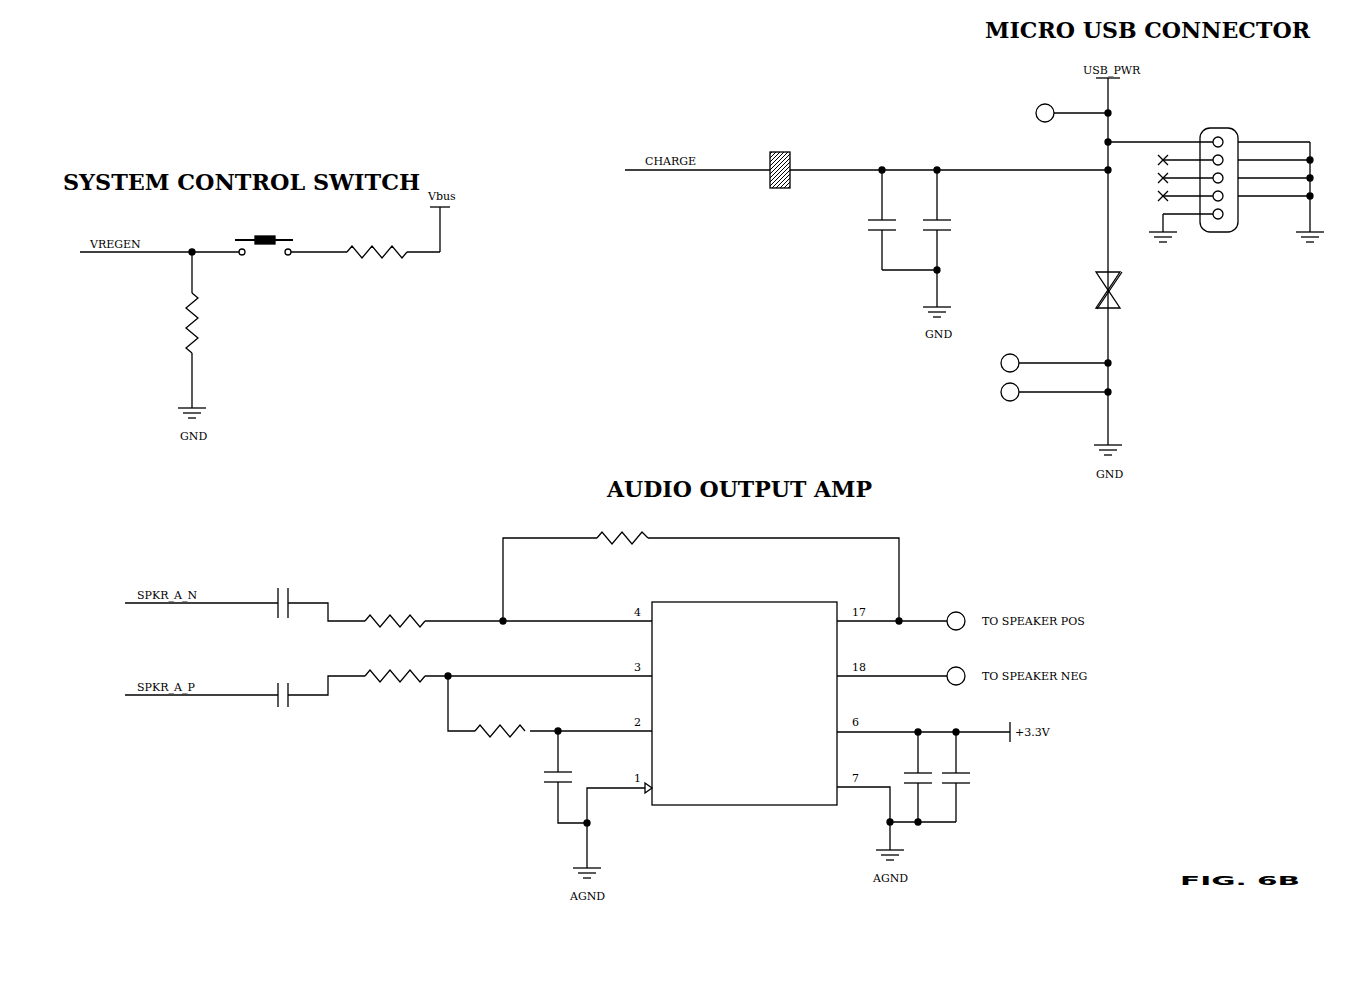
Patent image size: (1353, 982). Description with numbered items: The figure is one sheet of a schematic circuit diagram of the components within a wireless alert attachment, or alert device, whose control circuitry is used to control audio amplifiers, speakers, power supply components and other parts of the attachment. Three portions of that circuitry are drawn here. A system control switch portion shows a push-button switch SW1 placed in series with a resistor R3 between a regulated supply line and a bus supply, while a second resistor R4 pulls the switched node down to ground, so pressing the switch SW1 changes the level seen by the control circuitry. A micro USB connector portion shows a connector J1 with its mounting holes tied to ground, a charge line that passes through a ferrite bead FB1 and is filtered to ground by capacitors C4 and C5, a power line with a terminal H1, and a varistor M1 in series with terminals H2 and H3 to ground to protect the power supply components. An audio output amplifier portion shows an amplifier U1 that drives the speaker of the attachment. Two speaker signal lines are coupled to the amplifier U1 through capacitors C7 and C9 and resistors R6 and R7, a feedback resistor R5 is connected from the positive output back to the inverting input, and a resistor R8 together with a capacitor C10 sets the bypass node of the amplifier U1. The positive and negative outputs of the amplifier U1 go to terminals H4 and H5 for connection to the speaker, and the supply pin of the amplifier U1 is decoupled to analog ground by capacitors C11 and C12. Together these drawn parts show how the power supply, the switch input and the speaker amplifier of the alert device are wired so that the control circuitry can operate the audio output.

The push-button switch SW-PB SW1 is at (264, 246).
The resistor 10K R3 is at (377, 251).
The resistor 100K R4 is at (208, 330).
The connector terminal H1 is at (1063, 113).
The ferrite bead FB1 is at (782, 169).
The capacitor 10uF 1206 C4 is at (882, 220).
The capacitor 0.1uF C5 is at (954, 238).
The micro USB connector ZX62RD-AB-5P8 J1 is at (1214, 185).
The metal oxide varistor MLV M1 is at (1123, 290).
The connector terminal H2 is at (1046, 363).
The connector terminal H3 is at (1046, 392).
The capacitor 1.0uF C7 is at (288, 602).
The capacitor 1.0uF C9 is at (288, 693).
The feedback resistor 22K R5 is at (702, 568).
The resistor 10K R6 is at (395, 621).
The resistor 10K R7 is at (395, 674).
The resistor 22K R8 is at (550, 714).
The bypass capacitor 2.2uF C10 is at (548, 778).
The audio amplifier TPA741 U1 is at (744, 705).
The speaker positive terminal H4 is at (901, 613).
The speaker negative terminal H5 is at (901, 668).
The capacitor 0.1uF C11 is at (902, 777).
The capacitor 1.0uF C12 is at (975, 777).